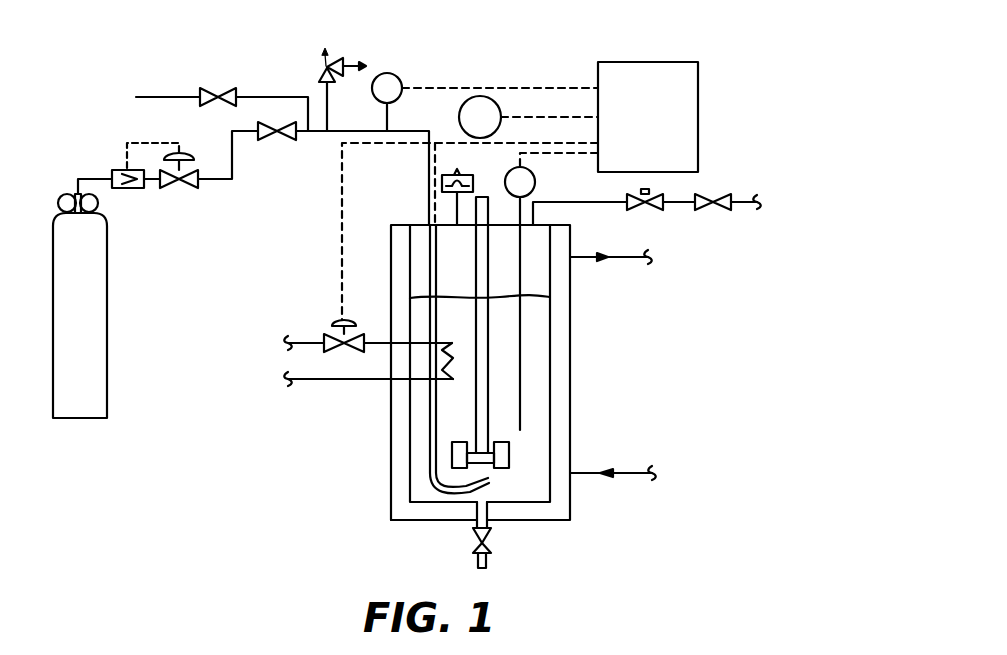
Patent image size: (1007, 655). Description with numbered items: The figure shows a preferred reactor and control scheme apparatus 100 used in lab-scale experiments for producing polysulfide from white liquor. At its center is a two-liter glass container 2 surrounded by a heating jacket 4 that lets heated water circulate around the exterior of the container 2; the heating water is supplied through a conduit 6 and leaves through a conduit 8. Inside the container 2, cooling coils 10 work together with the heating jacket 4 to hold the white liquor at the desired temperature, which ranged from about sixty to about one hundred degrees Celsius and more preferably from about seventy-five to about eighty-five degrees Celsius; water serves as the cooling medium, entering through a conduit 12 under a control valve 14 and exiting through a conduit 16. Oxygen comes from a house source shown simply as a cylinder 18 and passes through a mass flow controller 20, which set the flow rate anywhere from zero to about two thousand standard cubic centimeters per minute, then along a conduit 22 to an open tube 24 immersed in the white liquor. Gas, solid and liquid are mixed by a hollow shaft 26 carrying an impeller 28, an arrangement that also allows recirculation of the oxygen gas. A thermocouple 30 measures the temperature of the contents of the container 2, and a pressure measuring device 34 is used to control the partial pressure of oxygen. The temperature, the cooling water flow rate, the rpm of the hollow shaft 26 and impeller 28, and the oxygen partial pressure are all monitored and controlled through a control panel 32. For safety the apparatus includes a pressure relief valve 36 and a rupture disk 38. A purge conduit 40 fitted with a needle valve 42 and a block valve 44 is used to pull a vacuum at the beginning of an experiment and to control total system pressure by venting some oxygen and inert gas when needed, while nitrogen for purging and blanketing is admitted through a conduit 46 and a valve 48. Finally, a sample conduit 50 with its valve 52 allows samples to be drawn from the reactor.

The reactor and control scheme apparatus 100 is at (553, 30).
The glass container 2 is at (550, 341).
The heating jacket 4 is at (562, 389).
The conduit 6 is at (618, 471).
The conduit 8 is at (617, 257).
The cooling coils 10 is at (452, 342).
The conduit 12 is at (298, 341).
The control valve 14 is at (332, 321).
The conduit 16 is at (338, 380).
The cylinder 18 is at (107, 345).
The mass flow controller 20 is at (177, 186).
The conduit 22 is at (232, 161).
The open tube 24 is at (490, 482).
The hollow shaft 26 is at (476, 257).
The impeller 28 is at (512, 450).
The thermocouple 30 is at (536, 180).
The control panel 32 is at (698, 93).
The pressure measuring device 34 is at (389, 73).
The pressure relief valve 36 is at (340, 57).
The rupture disk 38 is at (467, 173).
The purge conduit 40 is at (683, 207).
The needle valve 42 is at (637, 210).
The block valve 44 is at (724, 196).
The conduit 46 is at (168, 97).
The valve 48 is at (225, 89).
The sample conduit 50 is at (474, 527).
The valve 52 is at (488, 548).